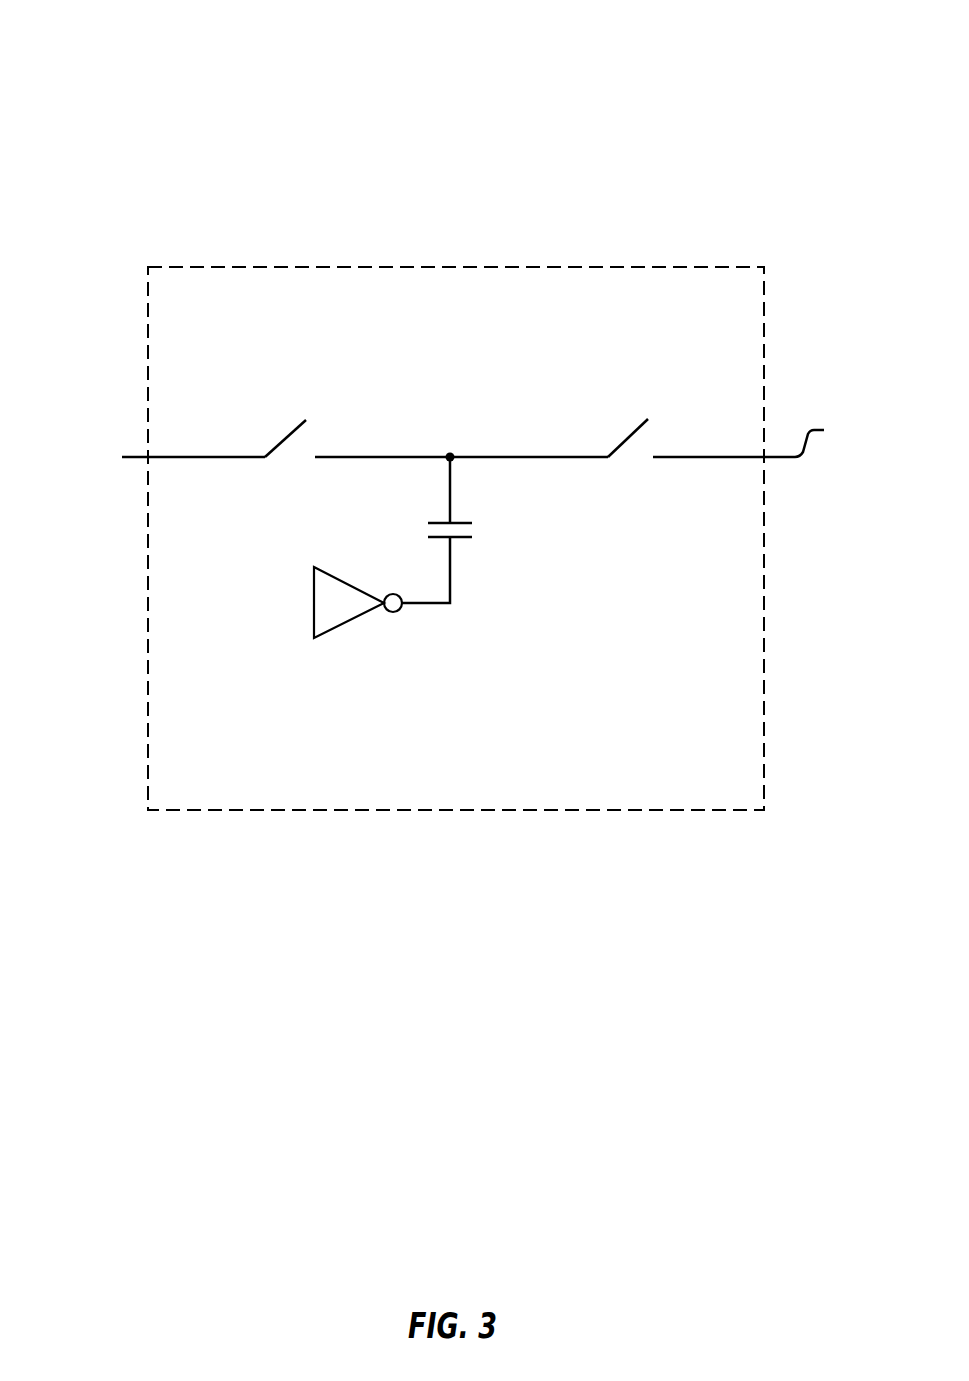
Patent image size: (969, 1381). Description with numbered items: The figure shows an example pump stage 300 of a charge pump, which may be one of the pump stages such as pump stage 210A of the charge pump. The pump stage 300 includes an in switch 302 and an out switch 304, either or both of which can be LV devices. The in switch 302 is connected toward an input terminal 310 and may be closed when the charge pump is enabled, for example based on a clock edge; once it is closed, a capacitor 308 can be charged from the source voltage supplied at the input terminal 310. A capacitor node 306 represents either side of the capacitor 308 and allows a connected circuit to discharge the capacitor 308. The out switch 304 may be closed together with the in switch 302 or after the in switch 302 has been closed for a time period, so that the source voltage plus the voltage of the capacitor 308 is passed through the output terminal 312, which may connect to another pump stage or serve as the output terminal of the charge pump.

The pump stage 300 is at (730, 44).
The pump stage 210A is at (690, 267).
The in switch 302 is at (296, 429).
The out switch 304 is at (622, 443).
The capacitor node 306 is at (450, 455).
The capacitor 308 is at (457, 521).
The input terminal 310 is at (122, 457).
The output terminal 312 is at (762, 437).